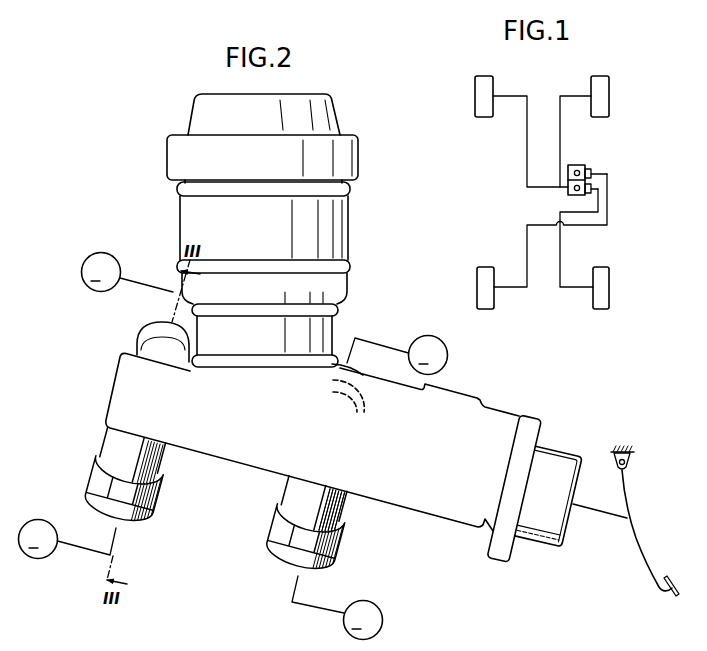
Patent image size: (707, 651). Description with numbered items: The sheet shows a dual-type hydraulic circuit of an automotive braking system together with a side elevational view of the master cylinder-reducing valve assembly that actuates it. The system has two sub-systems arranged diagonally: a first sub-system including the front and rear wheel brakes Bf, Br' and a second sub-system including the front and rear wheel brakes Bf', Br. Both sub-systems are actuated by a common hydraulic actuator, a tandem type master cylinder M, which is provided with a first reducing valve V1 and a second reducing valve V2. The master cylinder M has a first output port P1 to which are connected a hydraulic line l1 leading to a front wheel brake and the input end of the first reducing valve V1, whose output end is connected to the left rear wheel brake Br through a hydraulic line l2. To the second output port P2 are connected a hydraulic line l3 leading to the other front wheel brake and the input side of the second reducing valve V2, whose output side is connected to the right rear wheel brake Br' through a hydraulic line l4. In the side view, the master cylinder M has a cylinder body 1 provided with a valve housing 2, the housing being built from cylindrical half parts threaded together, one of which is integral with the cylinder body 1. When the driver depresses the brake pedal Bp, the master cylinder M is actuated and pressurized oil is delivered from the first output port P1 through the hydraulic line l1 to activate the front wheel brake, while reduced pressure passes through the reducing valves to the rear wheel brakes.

In FIG. 2, the cylinder body 1 is at (412, 503).
In FIG. 2, the valve housing 2 is at (91, 467).
In FIG. 1, the tandem type master cylinder M is at (585, 176).
In FIG. 2, the tandem type master cylinder M is at (347, 447).
In FIG. 1, the first output port P1 is at (574, 173).
In FIG. 1, the second output port P2 is at (574, 189).
In FIG. 1, the first reducing valve V1 is at (592, 170).
In FIG. 2, the first reducing valve V1 is at (121, 457).
In FIG. 1, the second reducing valve V2 is at (593, 187).
In FIG. 2, the second reducing valve V2 is at (286, 485).
In FIG. 1, the front wheel brake Bf is at (483, 83).
In FIG. 2, the front wheel brake Bf is at (397, 347).
In FIG. 1, the front wheel brake Bf' is at (600, 83).
In FIG. 2, the front wheel brake Bf' is at (128, 273).
In FIG. 1, the left rear wheel brake Br is at (484, 301).
In FIG. 2, the left rear wheel brake Br is at (68, 551).
In FIG. 1, the right rear wheel brake Br' is at (601, 301).
In FIG. 2, the right rear wheel brake Br' is at (337, 608).
In FIG. 2, the brake pedal Bp is at (668, 574).
In FIG. 1, the hydraulic line l1 is at (566, 96).
In FIG. 2, the hydraulic line l1 is at (146, 279).
In FIG. 1, the hydraulic line l2 is at (527, 248).
In FIG. 2, the hydraulic line l2 is at (87, 554).
In FIG. 1, the hydraulic line l3 is at (527, 142).
In FIG. 2, the hydraulic line l3 is at (378, 341).
In FIG. 1, the hydraulic line l4 is at (560, 248).
In FIG. 2, the hydraulic line l4 is at (318, 607).